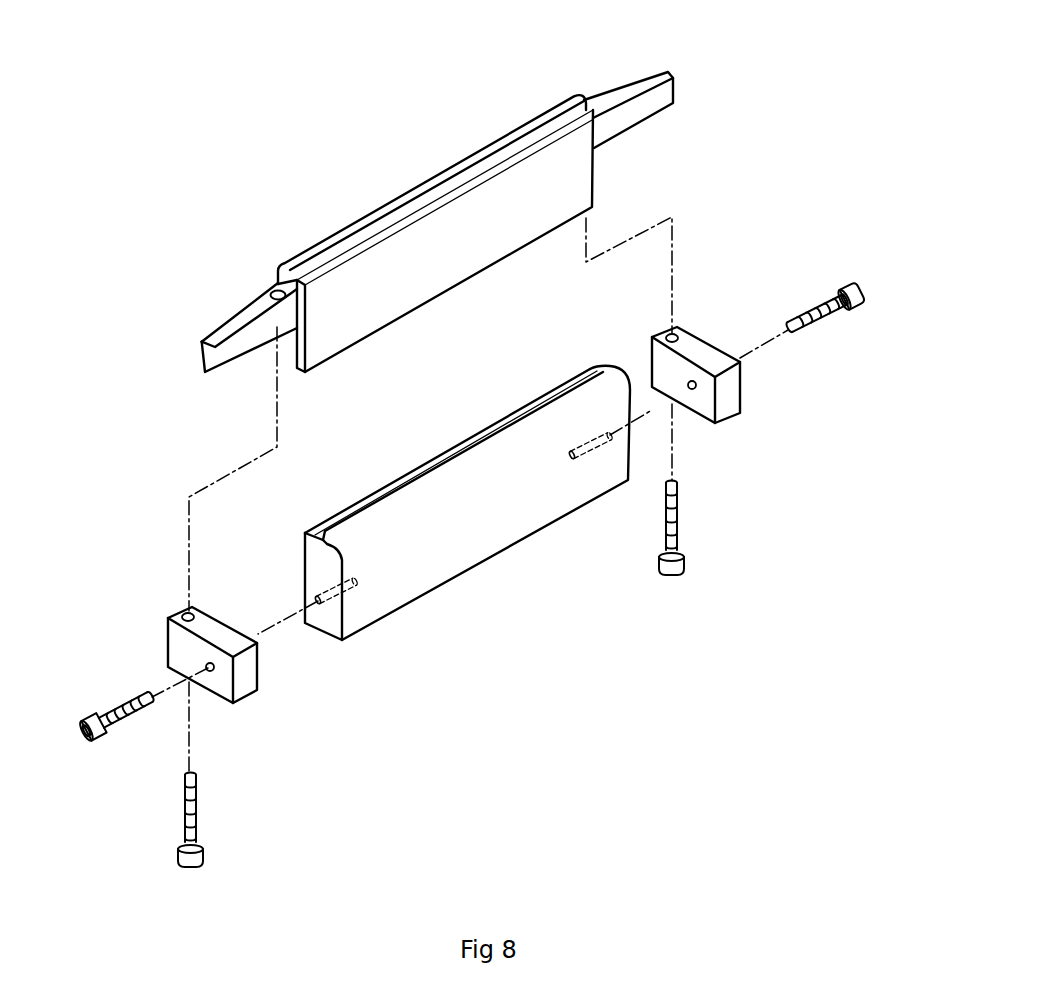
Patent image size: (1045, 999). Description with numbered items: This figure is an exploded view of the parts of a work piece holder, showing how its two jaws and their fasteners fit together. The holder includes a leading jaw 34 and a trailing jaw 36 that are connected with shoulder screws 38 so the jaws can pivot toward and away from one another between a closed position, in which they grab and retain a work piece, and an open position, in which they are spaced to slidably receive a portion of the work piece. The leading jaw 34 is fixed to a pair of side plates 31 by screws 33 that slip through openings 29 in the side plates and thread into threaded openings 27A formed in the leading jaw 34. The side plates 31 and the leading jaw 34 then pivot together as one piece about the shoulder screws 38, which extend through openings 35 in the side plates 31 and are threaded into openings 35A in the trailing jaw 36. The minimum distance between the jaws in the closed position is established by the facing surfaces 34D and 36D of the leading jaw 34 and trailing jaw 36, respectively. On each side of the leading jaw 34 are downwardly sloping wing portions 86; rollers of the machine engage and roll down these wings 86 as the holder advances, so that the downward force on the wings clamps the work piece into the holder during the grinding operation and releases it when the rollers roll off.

The threaded opening 27A is at (272, 290).
The hole 29 is at (186, 611).
The side plate 31 is at (250, 698).
The screw 33 is at (198, 795).
The leading jaw 34 is at (435, 233).
The facing surface 34D is at (437, 268).
The opening 35 is at (206, 663).
The threaded opening 35A is at (321, 607).
The trailing jaw 36 is at (467, 538).
The facing surface 36D is at (430, 462).
The shoulder screw 38 is at (116, 706).
The wing portion 86 is at (223, 332).